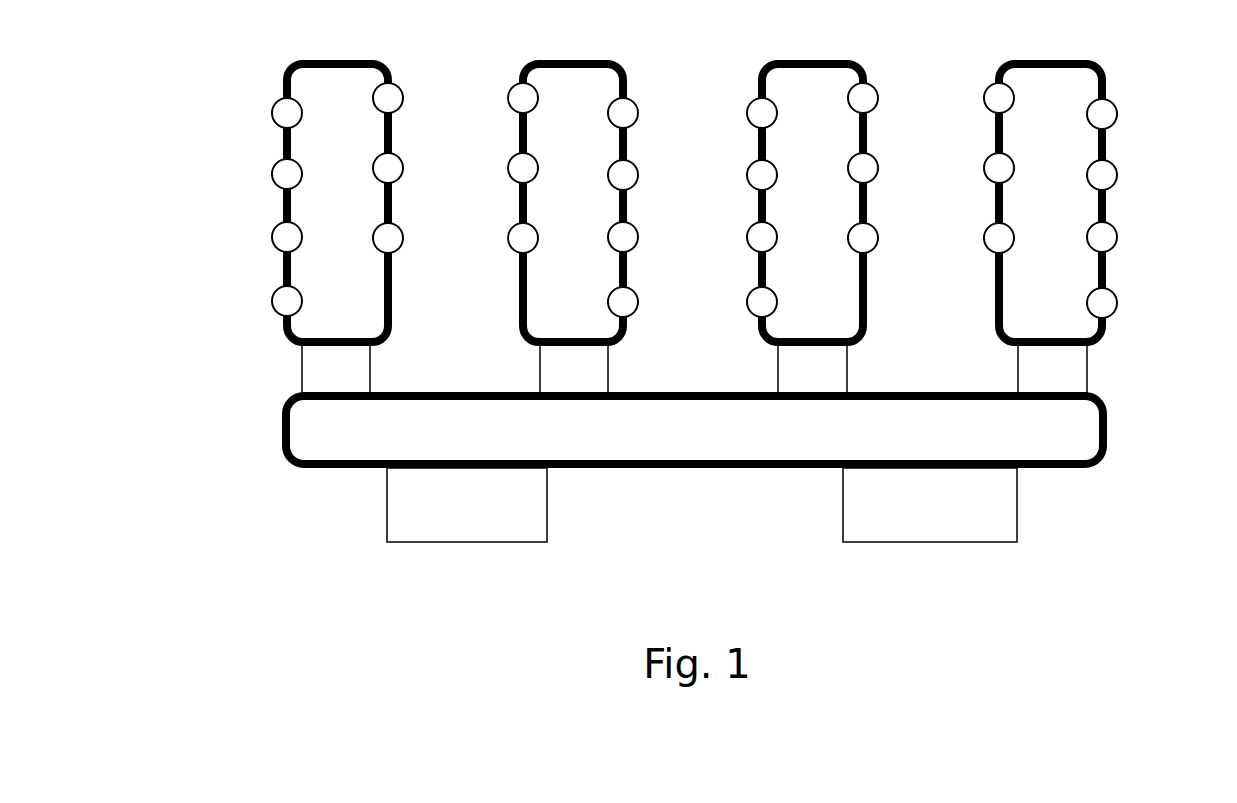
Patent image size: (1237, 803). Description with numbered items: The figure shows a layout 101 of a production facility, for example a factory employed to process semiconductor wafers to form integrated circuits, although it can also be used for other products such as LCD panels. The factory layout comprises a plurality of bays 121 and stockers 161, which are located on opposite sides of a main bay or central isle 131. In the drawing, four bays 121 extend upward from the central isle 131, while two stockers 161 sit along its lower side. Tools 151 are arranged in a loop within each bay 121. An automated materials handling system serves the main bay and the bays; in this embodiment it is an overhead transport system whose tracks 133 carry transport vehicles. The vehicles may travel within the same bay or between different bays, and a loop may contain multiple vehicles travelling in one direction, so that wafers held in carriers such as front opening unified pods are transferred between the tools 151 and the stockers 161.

The layout 101 is at (694, 329).
The bay 121 is at (337, 203).
The central isle 131 is at (694, 430).
The tracks 133 is at (283, 273).
The tool 151 is at (1117, 167).
The stocker 161 is at (702, 505).